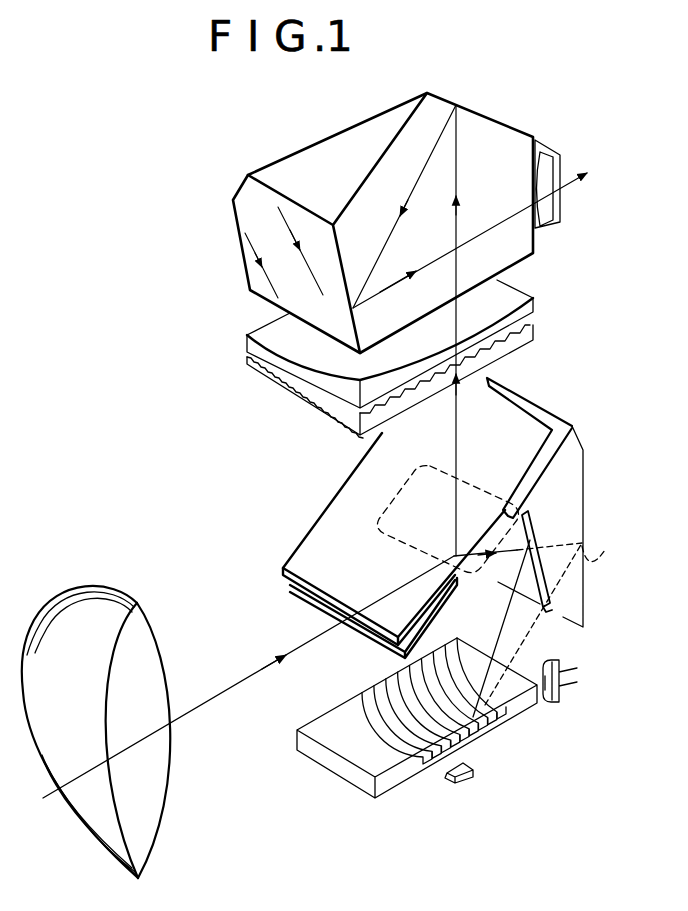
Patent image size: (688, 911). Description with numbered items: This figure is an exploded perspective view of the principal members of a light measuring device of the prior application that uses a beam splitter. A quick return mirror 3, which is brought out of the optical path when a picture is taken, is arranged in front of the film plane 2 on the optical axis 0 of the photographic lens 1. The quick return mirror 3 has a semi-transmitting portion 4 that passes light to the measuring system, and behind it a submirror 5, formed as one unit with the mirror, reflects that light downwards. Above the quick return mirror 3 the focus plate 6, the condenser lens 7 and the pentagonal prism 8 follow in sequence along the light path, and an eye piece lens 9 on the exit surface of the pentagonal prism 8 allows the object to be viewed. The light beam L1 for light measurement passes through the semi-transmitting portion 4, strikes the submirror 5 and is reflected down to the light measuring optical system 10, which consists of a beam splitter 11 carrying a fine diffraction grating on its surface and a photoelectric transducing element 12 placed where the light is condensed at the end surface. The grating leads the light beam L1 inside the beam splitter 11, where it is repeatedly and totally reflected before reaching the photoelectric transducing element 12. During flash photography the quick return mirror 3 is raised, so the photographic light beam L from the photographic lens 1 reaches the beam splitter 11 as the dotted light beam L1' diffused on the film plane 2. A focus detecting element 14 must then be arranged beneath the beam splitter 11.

The optical axis 0 is at (82, 777).
The photographic lens 1 is at (98, 612).
The film plane 2 is at (583, 450).
The quick return mirror 3 is at (298, 556).
The semi-transmitting portion 4 is at (395, 503).
The submirror 5 is at (530, 532).
The focus plate 6 is at (541, 333).
The condenser lens 7 is at (545, 301).
The pentagonal prism 8 is at (484, 120).
The eye piece lens 9 is at (562, 165).
The light measuring optical system 10 is at (598, 773).
The beam splitter 11 is at (513, 712).
The photoelectric transducing element 12 is at (560, 703).
The focus detecting element 14 is at (452, 787).
The photographic light beam L is at (240, 680).
The light beam for light measurement L1 is at (543, 628).
The diffused light beam L1' is at (560, 619).